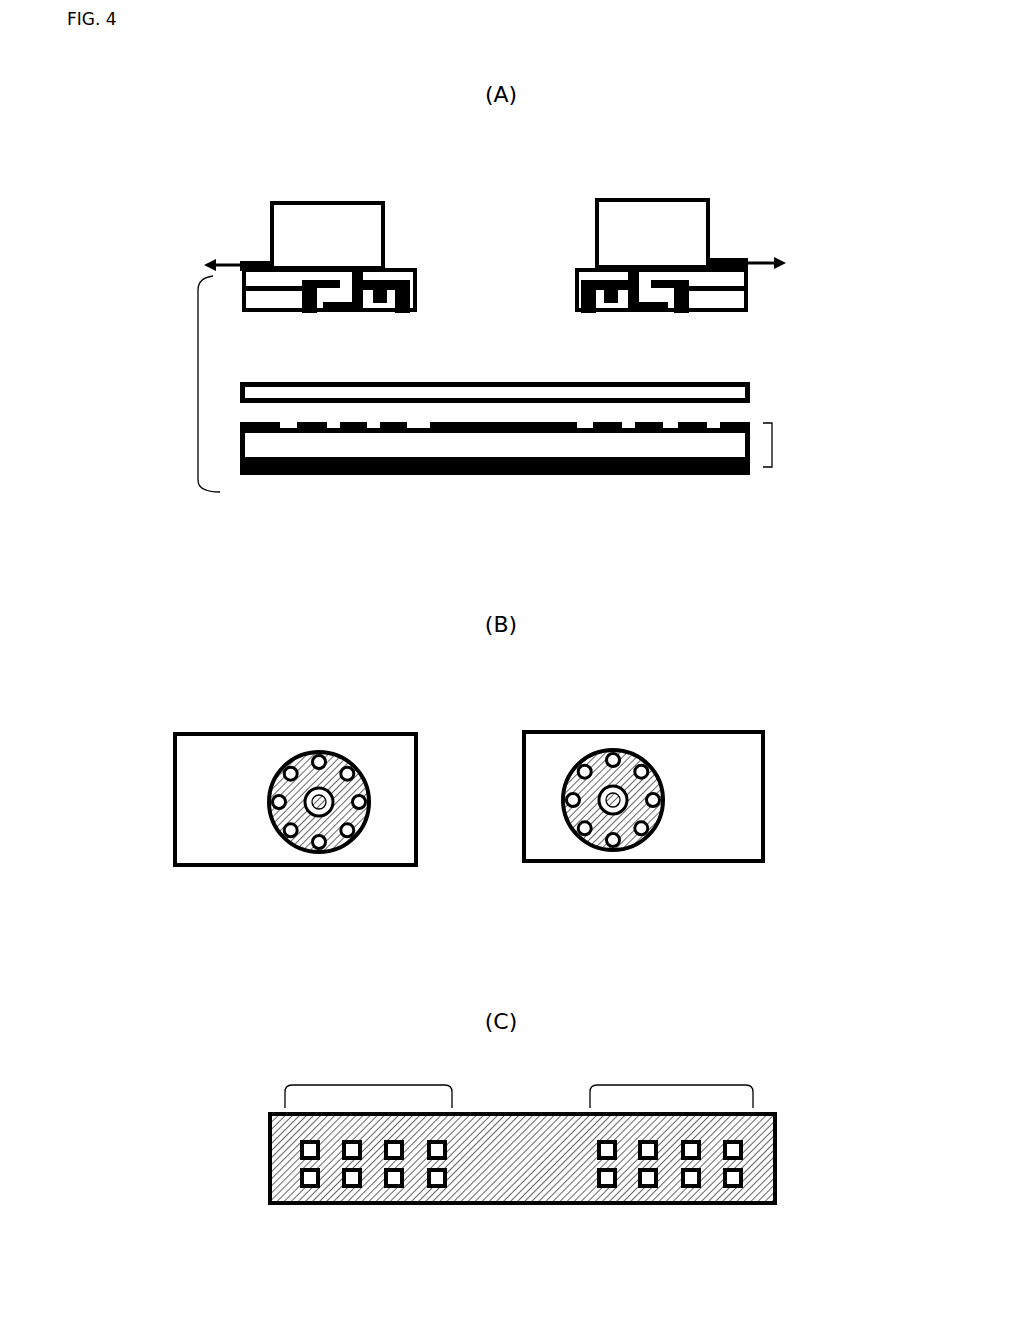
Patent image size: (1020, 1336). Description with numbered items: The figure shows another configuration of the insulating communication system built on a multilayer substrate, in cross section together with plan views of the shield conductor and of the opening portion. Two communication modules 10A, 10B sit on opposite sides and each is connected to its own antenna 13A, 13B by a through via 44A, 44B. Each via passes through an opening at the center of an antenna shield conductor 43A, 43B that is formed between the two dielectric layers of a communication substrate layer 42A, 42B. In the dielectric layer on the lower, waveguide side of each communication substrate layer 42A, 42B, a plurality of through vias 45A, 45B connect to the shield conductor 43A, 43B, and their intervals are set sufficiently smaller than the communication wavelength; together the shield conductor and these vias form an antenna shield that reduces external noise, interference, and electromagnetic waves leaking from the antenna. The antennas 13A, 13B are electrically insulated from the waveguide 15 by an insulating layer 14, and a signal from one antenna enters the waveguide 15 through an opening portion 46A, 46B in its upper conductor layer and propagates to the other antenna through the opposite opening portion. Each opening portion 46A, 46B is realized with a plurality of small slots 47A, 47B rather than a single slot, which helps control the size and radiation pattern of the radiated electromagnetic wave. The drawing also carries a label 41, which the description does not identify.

The communication module 10A is at (300, 202).
The communication module 10B is at (637, 199).
The antenna 13A is at (358, 316).
The antenna 13B is at (636, 320).
The insulating layer 14 is at (750, 393).
The waveguide 15 is at (772, 445).
The coupler assembly 41 is at (194, 384).
The communication substrate layer 42A is at (241, 288).
The communication substrate layer 42B is at (750, 277).
The antenna shield conductor 43A is at (385, 278).
The antenna shield conductor 43B is at (577, 277).
The through via 44A is at (370, 314).
The through via 44B is at (648, 314).
The through vias 45A is at (413, 311).
The through vias 45B is at (586, 310).
The opening portion 46A is at (370, 438).
The opening portion 46B is at (663, 438).
The small slots 47A is at (305, 1184).
The small slots 47B is at (601, 1184).